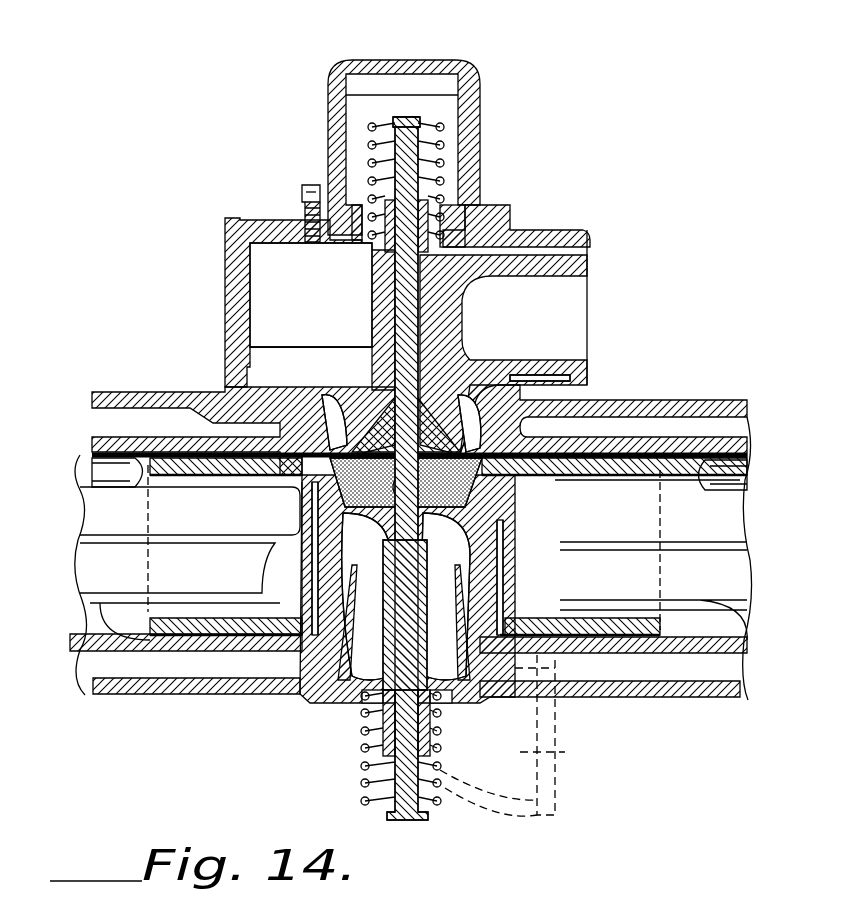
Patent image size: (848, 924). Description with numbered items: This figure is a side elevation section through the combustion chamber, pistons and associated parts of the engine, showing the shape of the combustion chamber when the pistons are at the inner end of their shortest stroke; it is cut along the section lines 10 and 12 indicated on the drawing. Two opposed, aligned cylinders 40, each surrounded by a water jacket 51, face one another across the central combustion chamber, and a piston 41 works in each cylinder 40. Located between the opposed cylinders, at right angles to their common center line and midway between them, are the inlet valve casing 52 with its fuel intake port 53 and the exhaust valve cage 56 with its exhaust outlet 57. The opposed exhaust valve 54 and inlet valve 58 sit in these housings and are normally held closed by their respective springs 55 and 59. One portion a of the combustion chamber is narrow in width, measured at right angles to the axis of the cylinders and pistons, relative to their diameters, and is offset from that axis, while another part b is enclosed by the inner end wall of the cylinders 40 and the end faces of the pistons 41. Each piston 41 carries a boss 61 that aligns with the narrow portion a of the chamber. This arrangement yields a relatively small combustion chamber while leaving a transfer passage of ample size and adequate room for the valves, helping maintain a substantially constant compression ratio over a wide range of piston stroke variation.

The section line 10- 10 is at (68, 405).
The section line 12- 12 is at (402, 115).
The cylinder 40 is at (100, 478).
The piston 41 is at (95, 524).
The water jacket 51 is at (657, 412).
The inlet valve casing 52 is at (313, 703).
The fuel intake port 53 is at (524, 735).
The exhaust valve 54 is at (400, 158).
The exhaust valve spring 55 is at (435, 166).
The exhaust valve cage 56 is at (542, 232).
The exhaust outlet 57 is at (575, 314).
The inlet valve 58 is at (372, 778).
The inlet valve spring 59 is at (362, 738).
The boss 61 is at (360, 508).
The combustion chamber portion a is at (448, 456).
The combustion chamber part b is at (306, 575).